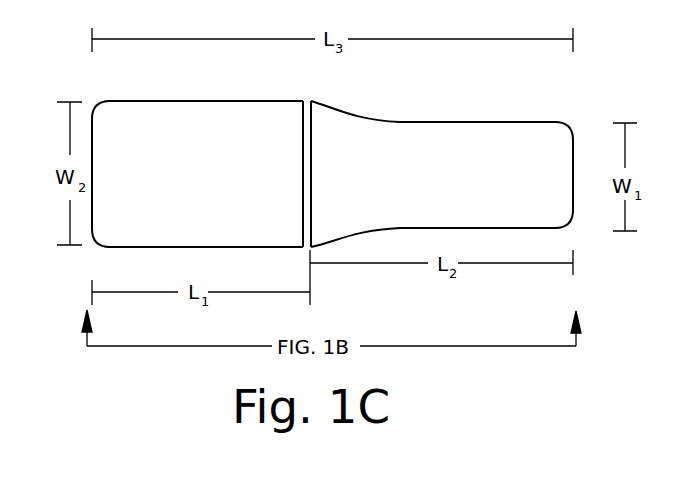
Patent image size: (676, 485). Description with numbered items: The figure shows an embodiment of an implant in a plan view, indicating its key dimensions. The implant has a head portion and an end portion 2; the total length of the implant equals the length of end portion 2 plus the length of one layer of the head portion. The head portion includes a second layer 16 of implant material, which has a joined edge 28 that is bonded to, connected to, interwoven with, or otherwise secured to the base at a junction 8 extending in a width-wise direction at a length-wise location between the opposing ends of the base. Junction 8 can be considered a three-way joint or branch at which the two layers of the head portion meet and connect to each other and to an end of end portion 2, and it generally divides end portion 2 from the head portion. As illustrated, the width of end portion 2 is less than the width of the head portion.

The end portion 2 is at (435, 178).
The junction 8 is at (309, 100).
The second layer 16 is at (177, 116).
The joined edge 28 is at (302, 142).